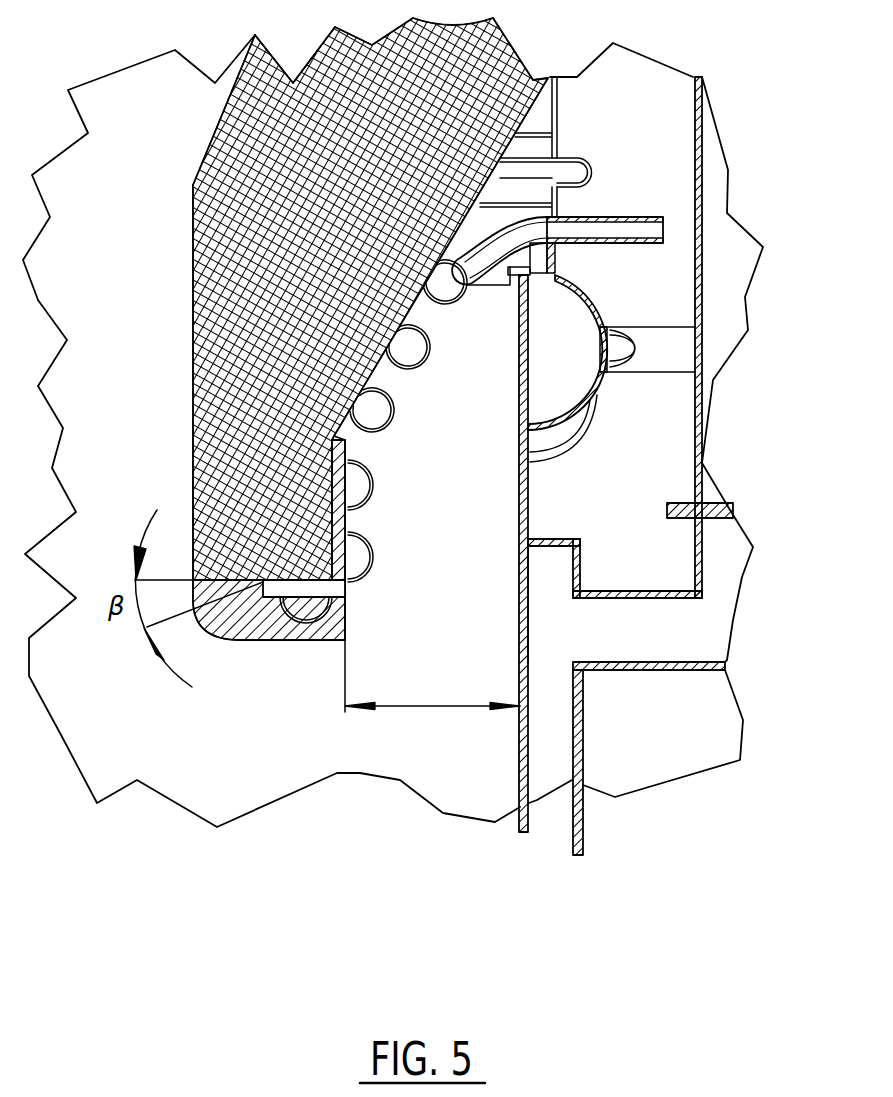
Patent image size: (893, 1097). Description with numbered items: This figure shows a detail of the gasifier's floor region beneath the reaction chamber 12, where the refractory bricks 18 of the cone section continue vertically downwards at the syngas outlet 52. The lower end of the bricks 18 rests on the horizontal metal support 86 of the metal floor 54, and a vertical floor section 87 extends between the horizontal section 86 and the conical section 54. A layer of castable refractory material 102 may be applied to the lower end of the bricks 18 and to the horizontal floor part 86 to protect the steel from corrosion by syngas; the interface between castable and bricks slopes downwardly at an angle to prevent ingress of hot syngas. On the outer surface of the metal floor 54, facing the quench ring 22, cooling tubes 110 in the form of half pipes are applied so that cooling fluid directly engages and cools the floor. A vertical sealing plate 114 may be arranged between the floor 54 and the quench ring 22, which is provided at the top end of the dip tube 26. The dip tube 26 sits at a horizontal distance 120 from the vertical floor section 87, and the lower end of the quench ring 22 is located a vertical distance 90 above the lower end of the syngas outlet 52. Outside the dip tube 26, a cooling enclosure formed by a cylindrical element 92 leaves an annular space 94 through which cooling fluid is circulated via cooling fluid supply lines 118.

The reaction chamber 12 is at (167, 137).
The refractory bricks 18 is at (233, 273).
The syngas outlet 52 is at (149, 410).
The metal floor 54 is at (413, 307).
The vertical floor section 87 is at (337, 453).
The cooling tubes 110 is at (355, 557).
The horizontal metal support 86 is at (322, 585).
The castable refractory layer 102 is at (257, 617).
The horizontal distance 120 is at (432, 676).
The dip tube 26 is at (525, 762).
The vertical distance 90 is at (527, 623).
The vertical sealing plate 114 is at (552, 122).
The quench ring 22 is at (575, 405).
The cooling fluid supply lines 118 is at (715, 567).
The annular space 94 is at (553, 733).
The cylindrical element 92 is at (580, 820).